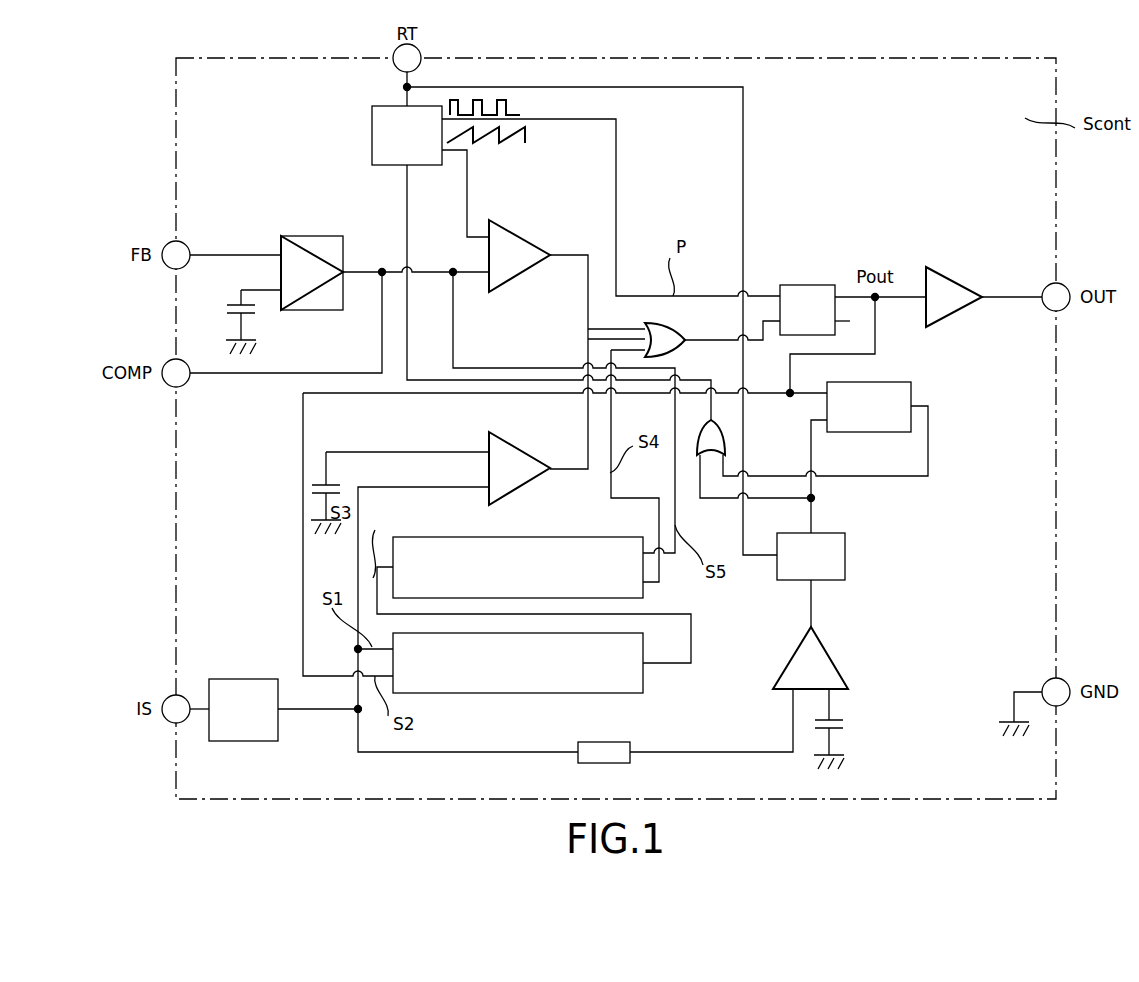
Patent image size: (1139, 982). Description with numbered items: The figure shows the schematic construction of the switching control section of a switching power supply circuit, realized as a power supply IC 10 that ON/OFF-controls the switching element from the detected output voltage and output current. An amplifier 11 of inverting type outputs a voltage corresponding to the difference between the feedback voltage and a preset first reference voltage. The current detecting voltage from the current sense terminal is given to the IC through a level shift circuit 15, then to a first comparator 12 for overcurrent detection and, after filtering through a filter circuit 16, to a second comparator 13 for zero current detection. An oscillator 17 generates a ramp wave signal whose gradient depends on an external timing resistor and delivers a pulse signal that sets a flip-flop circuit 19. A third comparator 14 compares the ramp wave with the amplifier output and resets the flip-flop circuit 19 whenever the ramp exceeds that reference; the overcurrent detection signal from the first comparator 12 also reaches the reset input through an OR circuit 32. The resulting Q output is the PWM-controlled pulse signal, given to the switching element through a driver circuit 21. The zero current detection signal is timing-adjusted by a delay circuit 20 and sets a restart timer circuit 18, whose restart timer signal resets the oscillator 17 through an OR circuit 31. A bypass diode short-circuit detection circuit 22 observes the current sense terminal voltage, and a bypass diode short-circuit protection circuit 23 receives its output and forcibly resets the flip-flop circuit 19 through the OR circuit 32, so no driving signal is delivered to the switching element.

The power supply IC 10 is at (768, 80).
The amplifier 11 is at (283, 236).
The first comparator 12 is at (488, 440).
The second comparator 13 is at (791, 655).
The third comparator 14 is at (508, 218).
The level shift circuit 15 is at (230, 679).
The filter circuit 16 is at (600, 763).
The oscillator 17 is at (372, 125).
The restart timer circuit 18 is at (912, 390).
The flip-flop circuit 19 is at (820, 285).
The delay circuit 20 is at (845, 552).
The driver circuit 21 is at (935, 267).
The bypass diode short-circuit detection circuit 22 is at (645, 683).
The bypass diode short-circuit protection circuit 23 is at (570, 535).
The OR circuit 31 is at (727, 437).
The OR circuit 32 is at (686, 335).